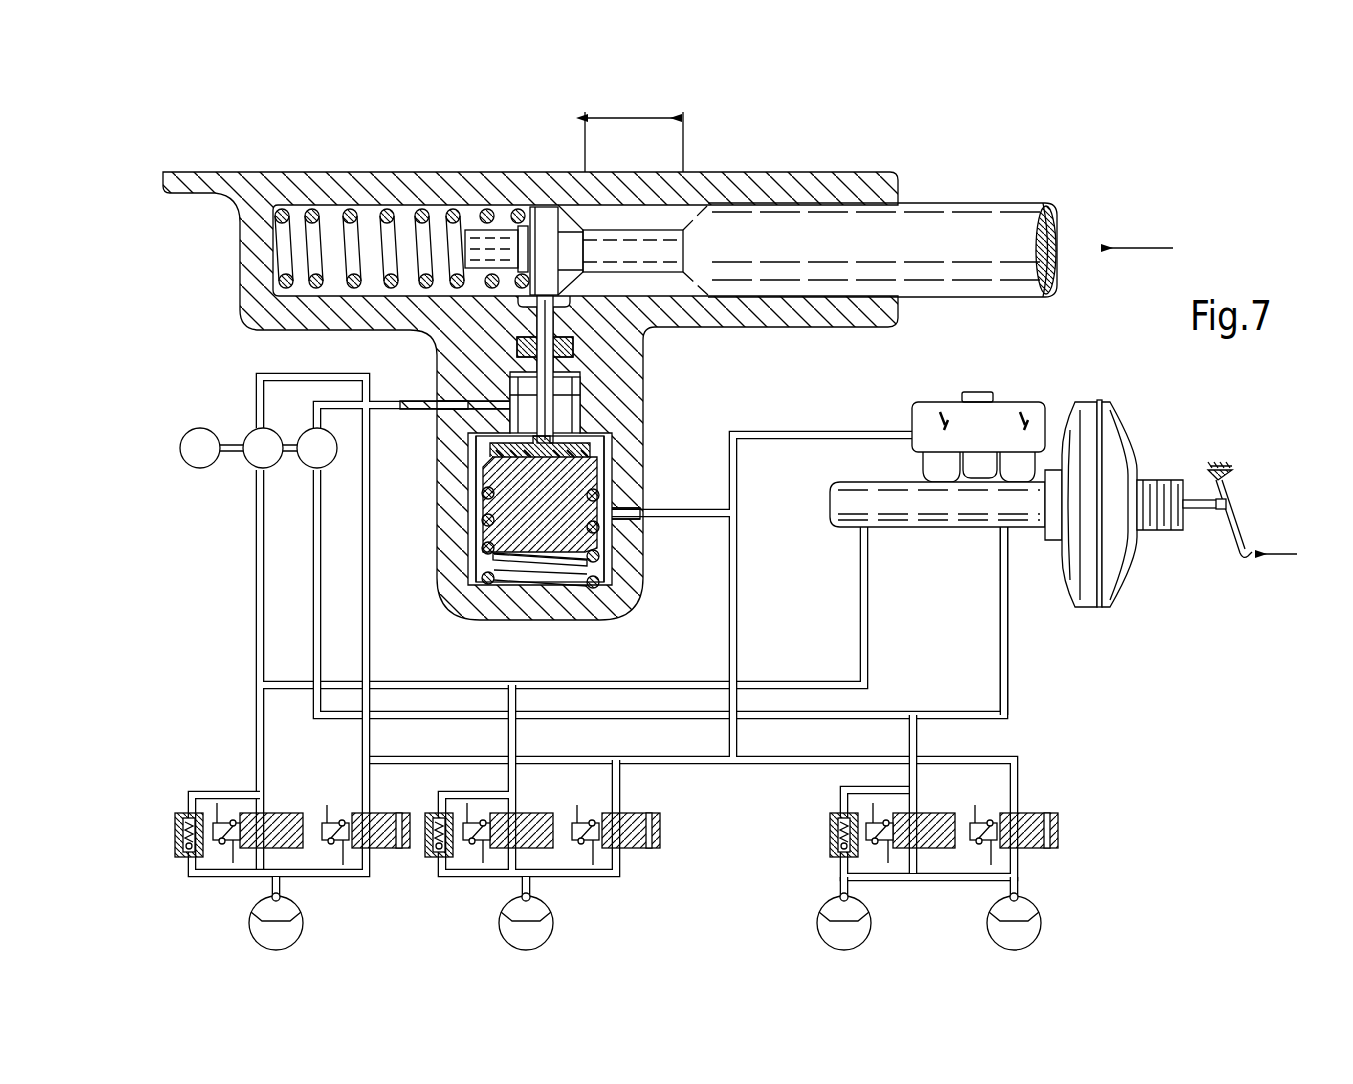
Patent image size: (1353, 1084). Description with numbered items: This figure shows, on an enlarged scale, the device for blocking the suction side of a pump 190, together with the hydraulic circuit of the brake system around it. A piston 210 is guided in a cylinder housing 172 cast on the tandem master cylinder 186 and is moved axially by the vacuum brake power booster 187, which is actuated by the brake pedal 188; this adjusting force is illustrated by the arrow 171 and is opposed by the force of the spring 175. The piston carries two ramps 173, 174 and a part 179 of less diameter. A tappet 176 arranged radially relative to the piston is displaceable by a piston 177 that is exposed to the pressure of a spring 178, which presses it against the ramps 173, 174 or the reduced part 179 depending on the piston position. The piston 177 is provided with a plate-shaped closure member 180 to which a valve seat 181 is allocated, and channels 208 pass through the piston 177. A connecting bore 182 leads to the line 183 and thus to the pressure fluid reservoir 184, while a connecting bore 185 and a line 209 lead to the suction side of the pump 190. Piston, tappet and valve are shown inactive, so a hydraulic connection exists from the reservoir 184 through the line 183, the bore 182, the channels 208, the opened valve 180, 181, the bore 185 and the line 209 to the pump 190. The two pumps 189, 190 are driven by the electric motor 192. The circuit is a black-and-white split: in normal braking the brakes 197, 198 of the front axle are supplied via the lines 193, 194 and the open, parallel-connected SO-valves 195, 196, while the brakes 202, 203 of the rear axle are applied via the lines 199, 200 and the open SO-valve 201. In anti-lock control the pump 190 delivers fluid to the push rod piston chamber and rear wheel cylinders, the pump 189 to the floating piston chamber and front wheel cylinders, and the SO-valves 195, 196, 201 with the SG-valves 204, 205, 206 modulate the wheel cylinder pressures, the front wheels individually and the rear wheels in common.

The arrow 171 is at (1141, 246).
The cylinder housing 172 is at (497, 182).
The ramp 173 is at (573, 228).
The ramp 174 is at (702, 227).
The spring 175 is at (347, 206).
The tappet 176 is at (560, 372).
The piston 177 is at (590, 545).
The spring 178 is at (597, 590).
The part of the piston of less diameter 179 is at (650, 242).
The closure member 180 is at (600, 447).
The valve seat 181 is at (593, 455).
The connecting bore 182 is at (622, 520).
The line 183 is at (812, 432).
The pressure fluid reservoir 184 is at (1010, 415).
The connecting bore 185 is at (472, 397).
The tandem master cylinder 186 is at (878, 492).
The vacuum brake power booster 187 is at (1085, 418).
The brake pedal 188 is at (1240, 525).
The pump 189 is at (255, 430).
The pump 190 is at (300, 453).
The electric motor 192 is at (188, 432).
The line 193 is at (865, 663).
The line 194 is at (420, 684).
The SO-valve 195 is at (280, 813).
The SO-valve 196 is at (530, 813).
The brake 197 is at (298, 924).
The brake 198 is at (548, 924).
The line 199 is at (1004, 653).
The line 200 is at (913, 740).
The SO-valve 201 is at (935, 812).
The brake 202 is at (866, 924).
The brake 203 is at (1036, 924).
The SG-valve 204 is at (378, 813).
The SG-valve 205 is at (628, 813).
The SG-valve 206 is at (1035, 813).
The channels 208 is at (607, 477).
The line 209 is at (403, 398).
The piston rod 210 is at (937, 222).